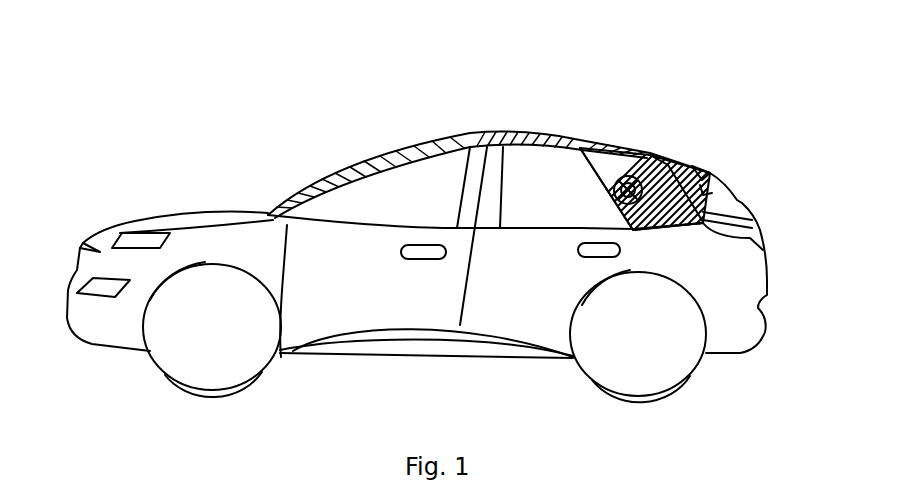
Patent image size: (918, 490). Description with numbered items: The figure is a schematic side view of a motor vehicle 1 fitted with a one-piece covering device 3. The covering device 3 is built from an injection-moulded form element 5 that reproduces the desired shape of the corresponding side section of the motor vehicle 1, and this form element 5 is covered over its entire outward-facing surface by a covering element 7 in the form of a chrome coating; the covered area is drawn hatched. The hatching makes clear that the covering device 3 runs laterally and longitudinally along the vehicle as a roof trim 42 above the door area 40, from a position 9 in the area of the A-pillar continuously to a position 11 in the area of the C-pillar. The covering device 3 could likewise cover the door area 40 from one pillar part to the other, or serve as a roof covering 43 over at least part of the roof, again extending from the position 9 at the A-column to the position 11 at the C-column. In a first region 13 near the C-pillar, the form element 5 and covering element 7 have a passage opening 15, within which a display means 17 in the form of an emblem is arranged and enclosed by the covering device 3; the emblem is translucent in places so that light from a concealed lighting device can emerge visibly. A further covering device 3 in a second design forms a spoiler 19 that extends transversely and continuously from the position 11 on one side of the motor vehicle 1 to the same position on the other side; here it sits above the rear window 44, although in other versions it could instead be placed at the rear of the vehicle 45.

The motor vehicle 1 is at (105, 145).
The covering device 3 is at (523, 122).
The form element 5 is at (691, 149).
The covering element 7 is at (583, 147).
The position in the area of the A-pillar 9 is at (268, 205).
The position in the area of the C-pillar 11 is at (710, 191).
The first region 13 is at (643, 150).
The passage opening 15 is at (680, 163).
The display means 17 is at (655, 221).
The spoiler 19 is at (672, 150).
The door area 40 is at (530, 292).
The roof trim 42 is at (478, 122).
The roof covering 43 is at (505, 120).
The rear window 44 is at (752, 157).
The rear of the vehicle 45 is at (770, 232).